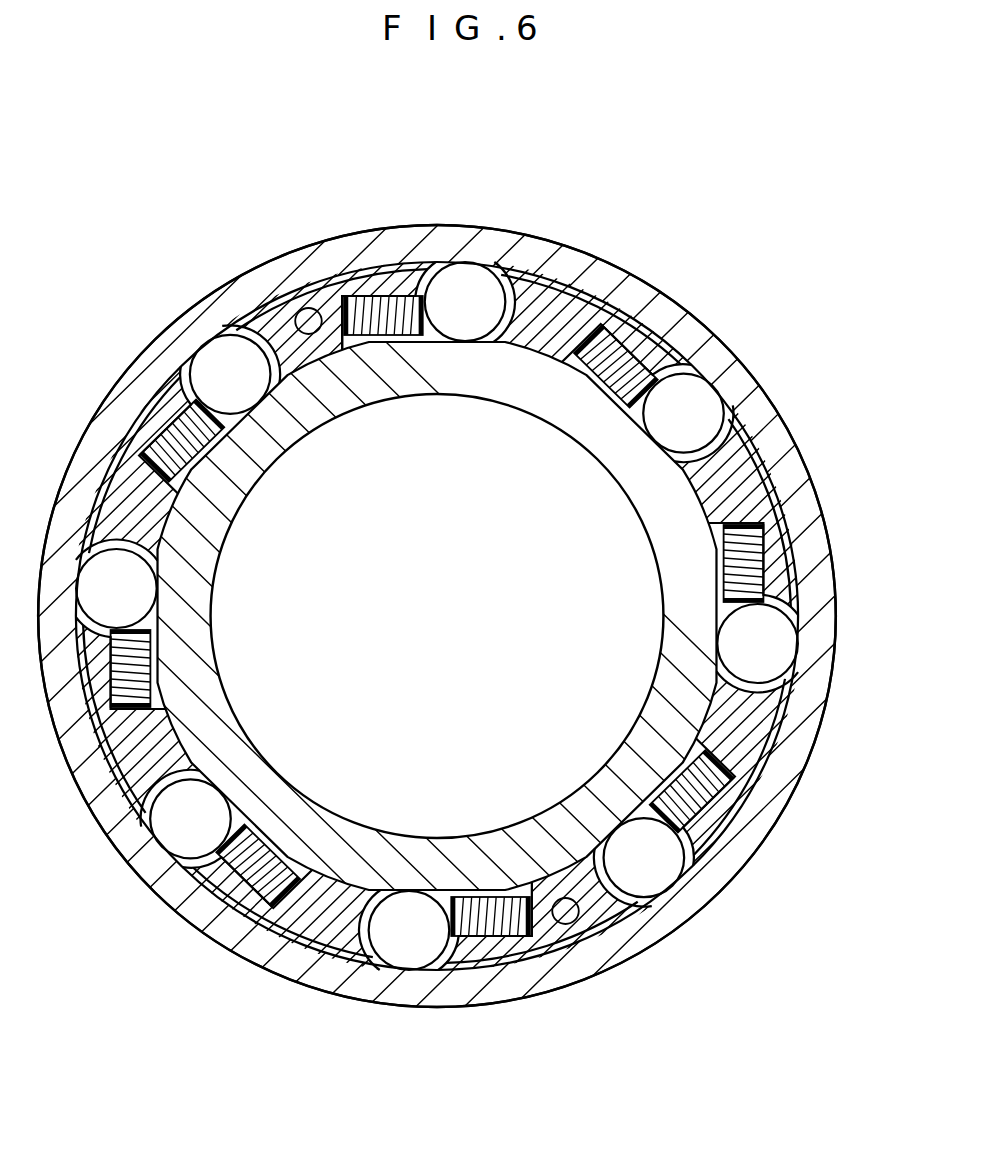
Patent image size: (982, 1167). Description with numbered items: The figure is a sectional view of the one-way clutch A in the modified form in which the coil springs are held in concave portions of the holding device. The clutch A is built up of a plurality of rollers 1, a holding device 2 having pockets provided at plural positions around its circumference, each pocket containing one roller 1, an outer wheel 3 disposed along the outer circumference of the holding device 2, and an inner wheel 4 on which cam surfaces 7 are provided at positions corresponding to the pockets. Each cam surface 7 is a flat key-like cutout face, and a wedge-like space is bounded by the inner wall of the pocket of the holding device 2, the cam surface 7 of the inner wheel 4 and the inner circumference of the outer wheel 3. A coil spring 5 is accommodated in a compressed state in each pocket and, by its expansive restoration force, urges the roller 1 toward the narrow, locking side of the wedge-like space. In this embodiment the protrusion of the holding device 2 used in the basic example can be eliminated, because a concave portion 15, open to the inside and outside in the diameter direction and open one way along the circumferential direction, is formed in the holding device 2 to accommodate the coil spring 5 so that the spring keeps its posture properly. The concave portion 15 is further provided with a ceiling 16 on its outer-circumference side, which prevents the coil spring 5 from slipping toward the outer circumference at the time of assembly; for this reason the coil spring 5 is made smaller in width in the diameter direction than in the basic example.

The roller 1 is at (467, 288).
The holding device 2 is at (568, 307).
The outer wheel 3 is at (785, 448).
The inner wheel 4 is at (650, 518).
The coil spring 5 is at (622, 331).
The cam surface 7 is at (464, 352).
The concave portion 15 is at (355, 295).
The ceiling 16 is at (388, 280).
The one-way clutch A is at (762, 334).